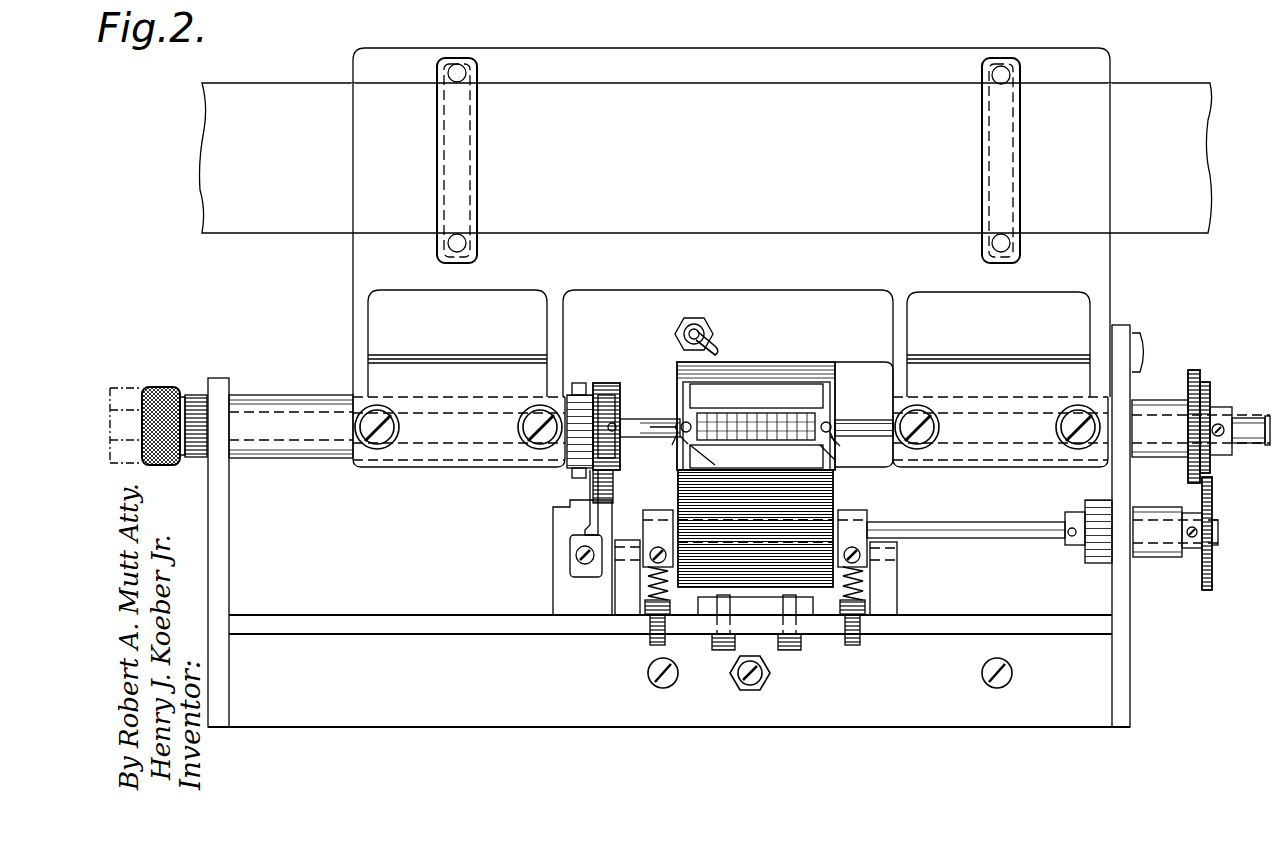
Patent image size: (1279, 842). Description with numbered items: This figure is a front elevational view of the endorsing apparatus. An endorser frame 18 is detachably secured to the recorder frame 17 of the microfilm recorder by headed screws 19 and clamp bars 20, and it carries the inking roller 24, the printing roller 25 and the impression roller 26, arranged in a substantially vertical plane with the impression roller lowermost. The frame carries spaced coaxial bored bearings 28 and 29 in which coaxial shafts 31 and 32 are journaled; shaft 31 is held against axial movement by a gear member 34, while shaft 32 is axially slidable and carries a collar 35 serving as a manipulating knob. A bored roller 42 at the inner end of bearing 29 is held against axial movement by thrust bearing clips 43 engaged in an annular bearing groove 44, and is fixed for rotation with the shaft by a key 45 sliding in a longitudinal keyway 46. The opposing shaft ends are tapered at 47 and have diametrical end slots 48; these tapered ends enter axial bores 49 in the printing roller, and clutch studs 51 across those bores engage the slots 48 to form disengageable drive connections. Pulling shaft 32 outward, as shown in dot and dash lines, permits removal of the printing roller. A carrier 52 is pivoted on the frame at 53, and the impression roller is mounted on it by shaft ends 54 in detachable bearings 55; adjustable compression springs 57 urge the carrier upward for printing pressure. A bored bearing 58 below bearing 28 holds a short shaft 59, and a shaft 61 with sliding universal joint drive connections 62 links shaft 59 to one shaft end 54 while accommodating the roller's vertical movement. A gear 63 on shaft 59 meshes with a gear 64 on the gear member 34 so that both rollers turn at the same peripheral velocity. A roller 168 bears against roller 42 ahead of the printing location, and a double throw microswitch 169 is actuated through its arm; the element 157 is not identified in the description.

The recorder frame 17 is at (215, 172).
The endorser frame 18 is at (353, 265).
The headed screws 19 is at (455, 82).
The clamp bars 20 is at (452, 148).
The inking roller 24 is at (790, 380).
The printing roller 25 is at (862, 364).
The impression roller 26 is at (834, 500).
The bored bearing 28 is at (1165, 454).
The bored bearing 29 is at (325, 456).
The shaft 31 is at (880, 440).
The shaft 32 is at (650, 440).
The gear member 34 is at (1224, 409).
The collar 35 is at (160, 386).
The bored roller 42 is at (620, 388).
The thrust bearing clips 43 is at (585, 395).
The annular bearing groove 44 is at (603, 410).
The key 45 is at (628, 448).
The longitudinal keyway 46 is at (665, 425).
The tapered ends 47 is at (684, 444).
The diametrical end slots 48 is at (684, 424).
The axial bores 49 is at (700, 452).
The clutch studs 51 is at (669, 436).
The carrier 52 is at (895, 550).
The pivotal axis 53 is at (640, 553).
The shaft ends 54 is at (655, 522).
The bearings 55 is at (920, 512).
The adjustable compression springs 57 is at (645, 582).
The bored bearing 58 is at (1178, 508).
The short shaft 59 is at (1158, 558).
The shaft 61 is at (995, 530).
The sliding universal joint drive connections 62 is at (872, 515).
The gear 63 is at (1212, 500).
The gear 64 is at (1206, 391).
The gear 157 is at (1193, 371).
The roller 168 is at (595, 480).
The double throw microswitch 169 is at (555, 585).